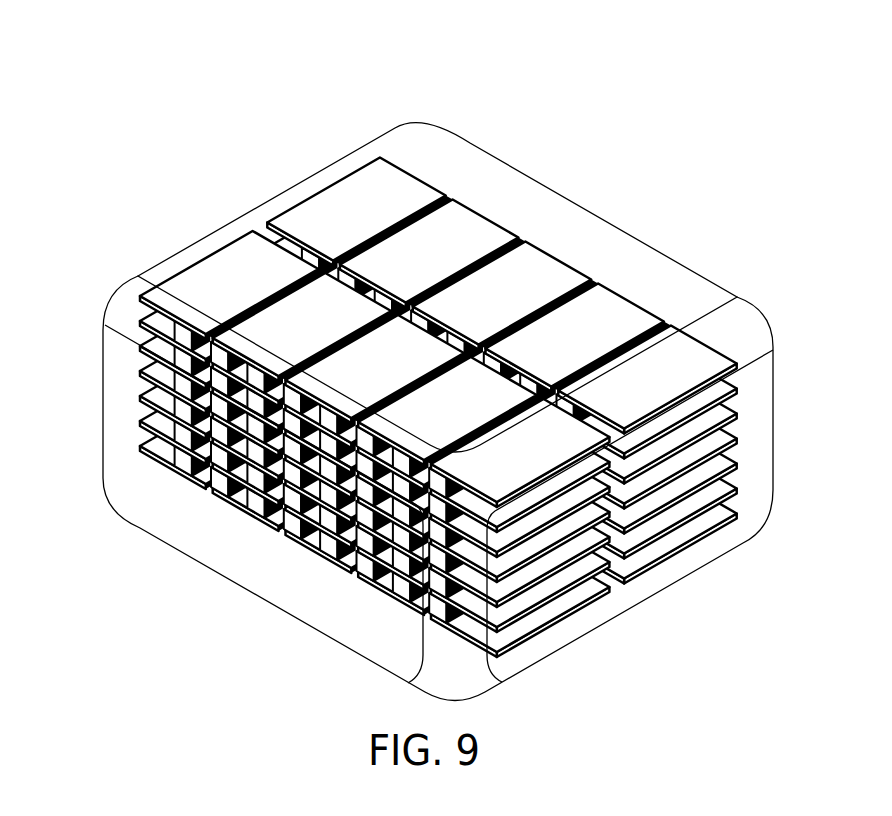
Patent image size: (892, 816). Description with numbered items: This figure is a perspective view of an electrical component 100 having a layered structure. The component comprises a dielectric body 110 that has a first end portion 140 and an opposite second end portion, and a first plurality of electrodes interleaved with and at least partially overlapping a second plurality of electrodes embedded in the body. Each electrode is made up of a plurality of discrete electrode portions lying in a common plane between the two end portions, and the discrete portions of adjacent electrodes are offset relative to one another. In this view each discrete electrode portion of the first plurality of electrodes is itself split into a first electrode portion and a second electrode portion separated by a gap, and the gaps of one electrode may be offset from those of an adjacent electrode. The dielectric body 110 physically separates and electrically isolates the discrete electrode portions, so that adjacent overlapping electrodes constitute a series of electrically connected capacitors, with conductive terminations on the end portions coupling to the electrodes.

The electrical component 100 is at (113, 118).
The dielectric body 110 is at (466, 141).
The first end portion 140 is at (262, 206).